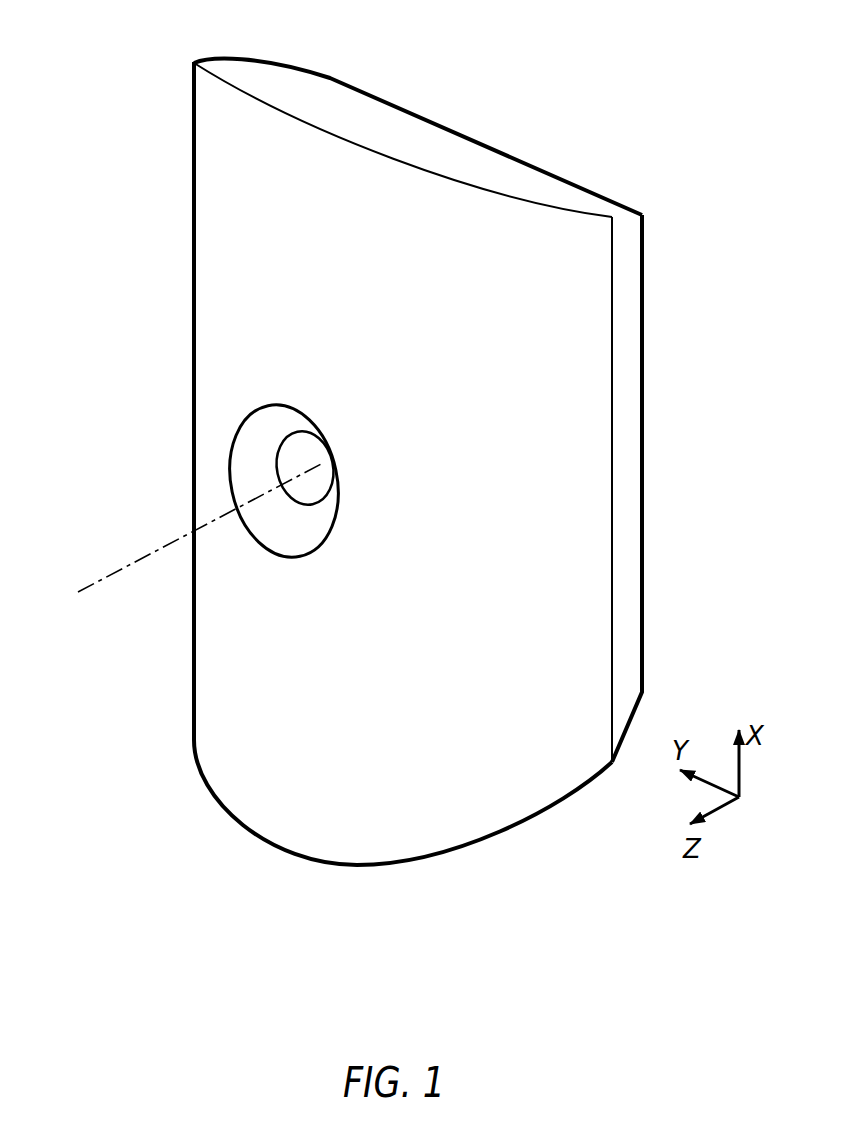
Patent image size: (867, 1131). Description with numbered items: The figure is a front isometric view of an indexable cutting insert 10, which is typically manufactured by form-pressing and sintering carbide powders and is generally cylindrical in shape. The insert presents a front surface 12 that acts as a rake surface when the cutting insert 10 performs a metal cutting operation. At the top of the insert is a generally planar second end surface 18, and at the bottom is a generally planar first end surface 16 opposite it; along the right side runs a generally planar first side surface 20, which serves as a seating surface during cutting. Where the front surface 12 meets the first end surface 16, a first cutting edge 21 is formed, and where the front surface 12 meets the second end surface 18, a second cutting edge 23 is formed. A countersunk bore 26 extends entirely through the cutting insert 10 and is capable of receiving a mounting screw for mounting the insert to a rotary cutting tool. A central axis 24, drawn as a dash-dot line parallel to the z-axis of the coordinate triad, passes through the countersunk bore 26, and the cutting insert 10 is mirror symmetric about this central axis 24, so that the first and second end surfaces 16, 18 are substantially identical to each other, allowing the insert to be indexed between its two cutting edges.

The indexable cutting insert 10 is at (83, 128).
The front surface 12 is at (213, 584).
The first end surface 16 is at (516, 856).
The second end surface 18 is at (383, 126).
The first side surface 20 is at (624, 502).
The first cutting edge 21 is at (205, 790).
The second cutting edge 23 is at (297, 128).
The central axis 24 is at (127, 565).
The countersunk bore 26 is at (287, 532).